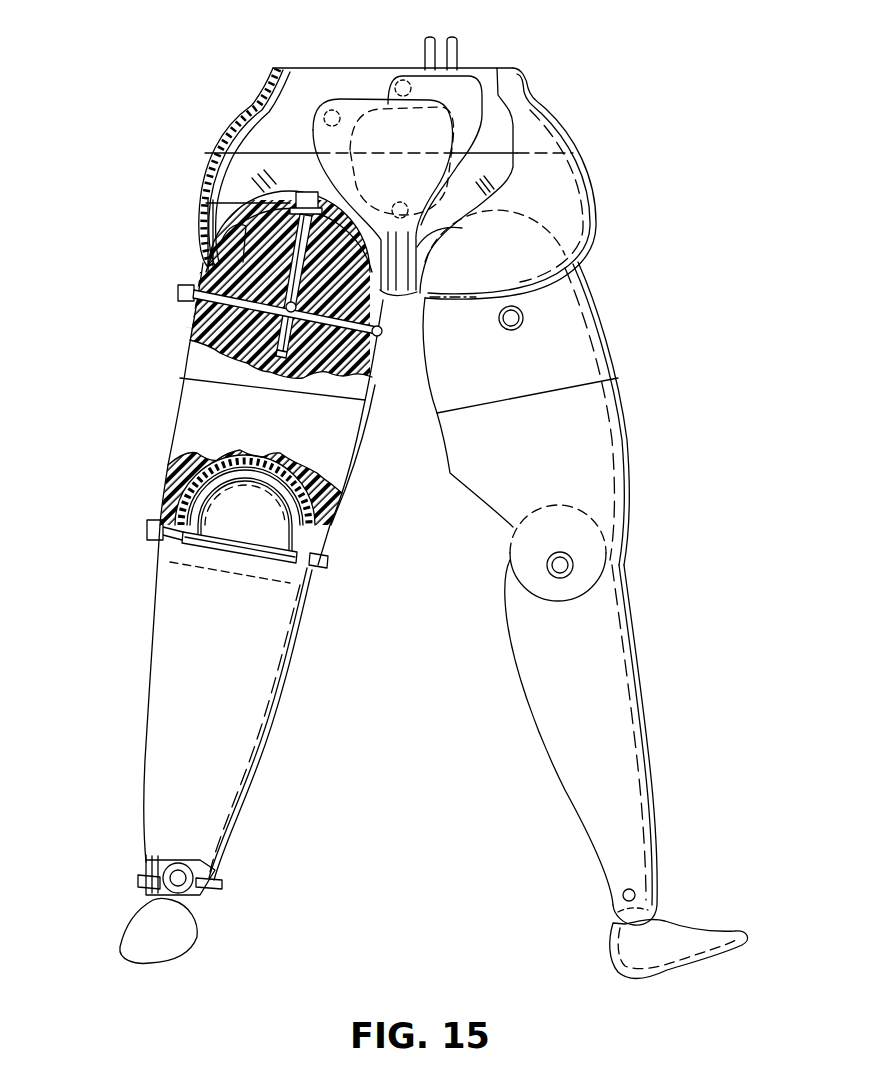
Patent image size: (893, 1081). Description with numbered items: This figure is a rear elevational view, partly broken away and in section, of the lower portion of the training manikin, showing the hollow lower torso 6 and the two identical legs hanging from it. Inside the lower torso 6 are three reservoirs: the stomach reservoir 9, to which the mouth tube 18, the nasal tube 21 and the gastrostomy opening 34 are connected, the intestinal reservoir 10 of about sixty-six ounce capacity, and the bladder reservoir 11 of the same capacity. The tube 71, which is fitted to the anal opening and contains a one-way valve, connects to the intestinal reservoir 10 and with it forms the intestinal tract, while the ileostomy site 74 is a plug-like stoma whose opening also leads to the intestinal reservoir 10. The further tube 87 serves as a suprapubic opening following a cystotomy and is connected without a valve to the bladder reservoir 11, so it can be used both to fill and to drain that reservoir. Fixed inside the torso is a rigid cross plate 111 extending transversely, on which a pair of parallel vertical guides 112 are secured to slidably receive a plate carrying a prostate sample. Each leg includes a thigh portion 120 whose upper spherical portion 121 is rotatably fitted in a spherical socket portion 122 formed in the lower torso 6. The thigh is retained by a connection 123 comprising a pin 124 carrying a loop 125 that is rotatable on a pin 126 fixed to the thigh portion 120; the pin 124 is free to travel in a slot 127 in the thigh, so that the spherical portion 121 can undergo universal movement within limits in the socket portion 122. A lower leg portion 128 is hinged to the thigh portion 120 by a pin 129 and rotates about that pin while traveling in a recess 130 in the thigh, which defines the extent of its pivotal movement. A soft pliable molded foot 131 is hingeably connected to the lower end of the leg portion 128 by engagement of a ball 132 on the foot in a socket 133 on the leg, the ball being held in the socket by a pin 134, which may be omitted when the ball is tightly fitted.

The lower torso 6 is at (213, 127).
The stomach reservoir 9 is at (480, 79).
The intestinal reservoir 10 is at (320, 168).
The bladder reservoir 11 is at (488, 172).
The mouth tube 18 is at (455, 56).
The nasal tube 21 is at (424, 56).
The gastrostomy opening 34 is at (398, 82).
The tube 71 is at (404, 276).
The ileostomy site 74 is at (328, 110).
The suprapubic opening tube 87 is at (402, 162).
The cross plate 111 is at (258, 170).
The vertical guides 112 is at (428, 238).
The thigh portion 120 is at (166, 410).
The upper spherical portion 121 is at (206, 243).
The spherical socket portion 122 is at (246, 232).
The connection 123 is at (280, 273).
The pin 124 is at (300, 276).
The loop 125 is at (292, 330).
The pin 126 is at (196, 331).
The slot 127 is at (290, 262).
The lower leg portion 128 is at (268, 691).
The pin 129 is at (232, 556).
The recess 130 is at (286, 466).
The foot 131 is at (188, 941).
The ball 132 is at (178, 866).
The socket 133 is at (222, 864).
The pin 134 is at (150, 887).